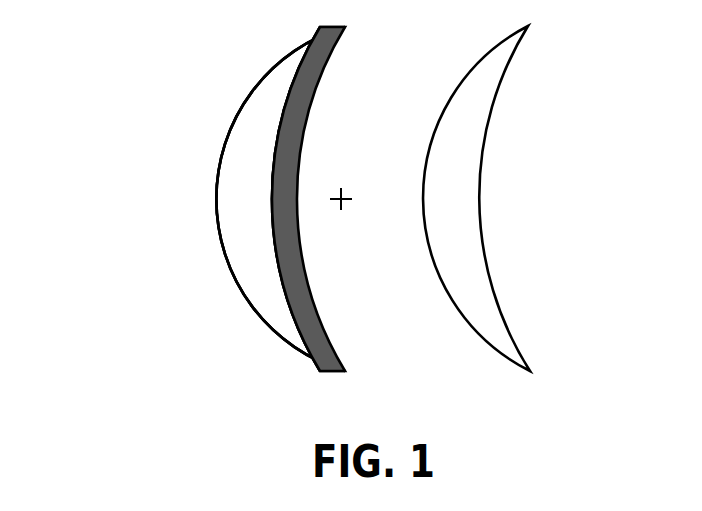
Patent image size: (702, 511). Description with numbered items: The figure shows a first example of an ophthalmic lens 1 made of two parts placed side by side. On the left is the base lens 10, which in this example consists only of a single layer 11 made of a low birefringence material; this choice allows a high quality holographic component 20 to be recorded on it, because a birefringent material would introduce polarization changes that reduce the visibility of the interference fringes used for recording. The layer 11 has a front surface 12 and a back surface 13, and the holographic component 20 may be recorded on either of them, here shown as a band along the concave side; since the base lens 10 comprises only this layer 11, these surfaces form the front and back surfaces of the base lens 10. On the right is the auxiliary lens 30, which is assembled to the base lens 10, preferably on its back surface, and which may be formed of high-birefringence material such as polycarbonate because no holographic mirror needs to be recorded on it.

The ophthalmic lens 1 is at (305, 225).
The base lens 10 is at (228, 226).
The layer 11 is at (272, 83).
The front surface 12 is at (205, 260).
The back surface 13 is at (285, 334).
The holographic component 20 is at (290, 135).
The auxiliary lens 30 is at (461, 163).